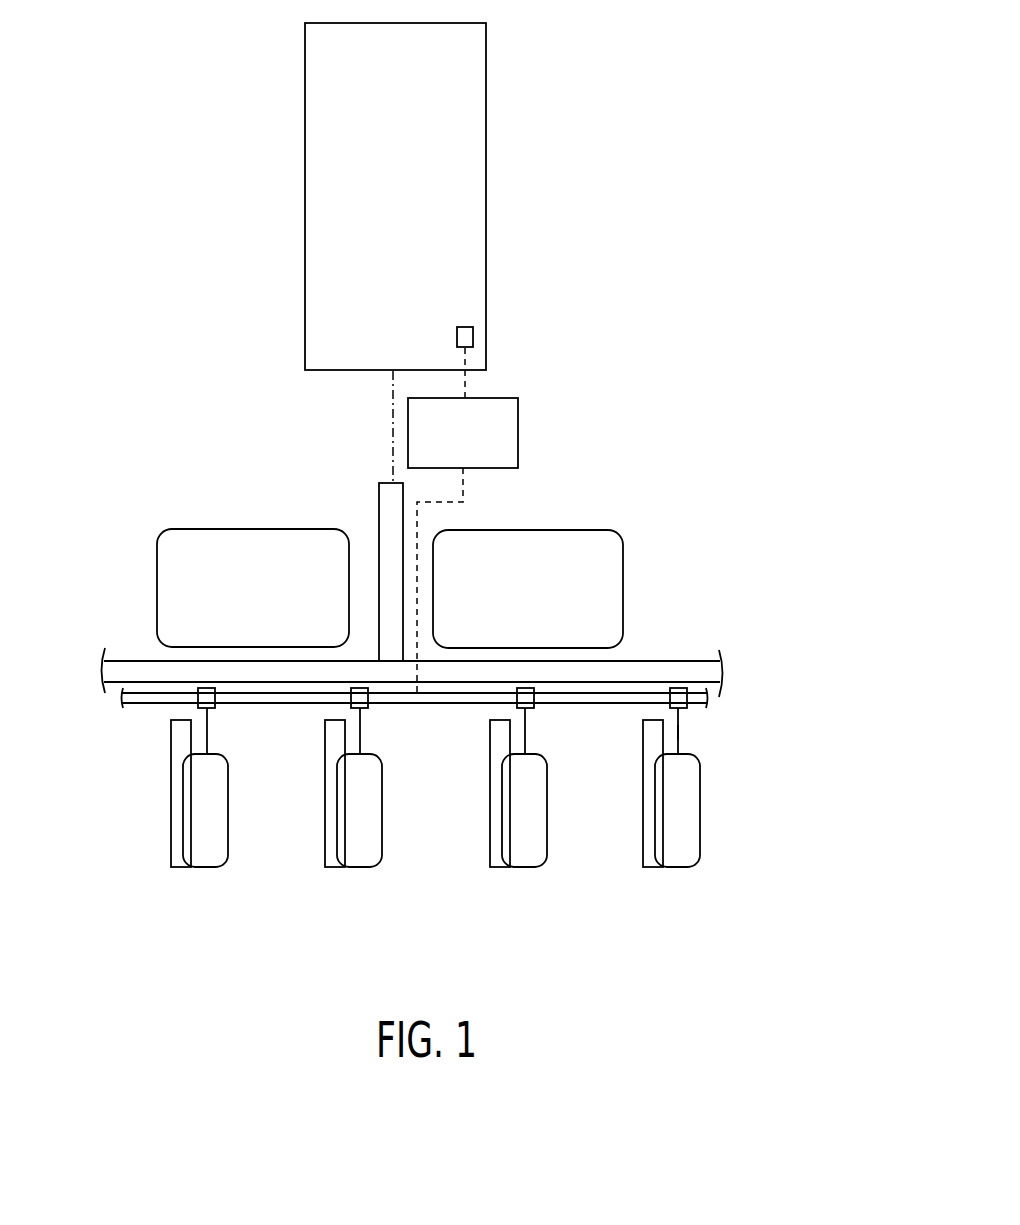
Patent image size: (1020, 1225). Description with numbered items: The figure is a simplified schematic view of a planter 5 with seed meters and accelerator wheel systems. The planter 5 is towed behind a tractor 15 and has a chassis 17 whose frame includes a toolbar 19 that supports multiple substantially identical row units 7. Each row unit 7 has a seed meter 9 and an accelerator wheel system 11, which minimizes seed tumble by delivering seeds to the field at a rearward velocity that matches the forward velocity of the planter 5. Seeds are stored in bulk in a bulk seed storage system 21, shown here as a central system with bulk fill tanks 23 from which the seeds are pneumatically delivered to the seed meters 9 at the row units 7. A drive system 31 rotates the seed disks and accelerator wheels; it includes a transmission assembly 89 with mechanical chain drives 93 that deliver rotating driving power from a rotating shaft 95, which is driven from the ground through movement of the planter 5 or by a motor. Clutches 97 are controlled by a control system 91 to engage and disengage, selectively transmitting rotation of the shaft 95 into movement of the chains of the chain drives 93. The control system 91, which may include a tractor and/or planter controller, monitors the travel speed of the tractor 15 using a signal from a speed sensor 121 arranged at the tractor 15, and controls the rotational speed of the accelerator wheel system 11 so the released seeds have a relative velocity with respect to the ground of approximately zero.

The planter 5 is at (629, 502).
The row unit 7 is at (431, 854).
The seed meter 9 is at (214, 845).
The accelerator wheel system 11 is at (180, 800).
The tractor 15 is at (486, 197).
The chassis 17 is at (380, 500).
The toolbar 19 is at (693, 664).
The bulk seed storage system 21 is at (385, 553).
The bulk fill tank 23 is at (310, 530).
The drive system 31 is at (702, 689).
The transmission assembly 89 is at (683, 732).
The control system 91 is at (493, 398).
The chain drive 93 is at (684, 745).
The rotating shaft 95 is at (608, 705).
The clutch 97 is at (677, 688).
The speed sensor 121 is at (474, 334).